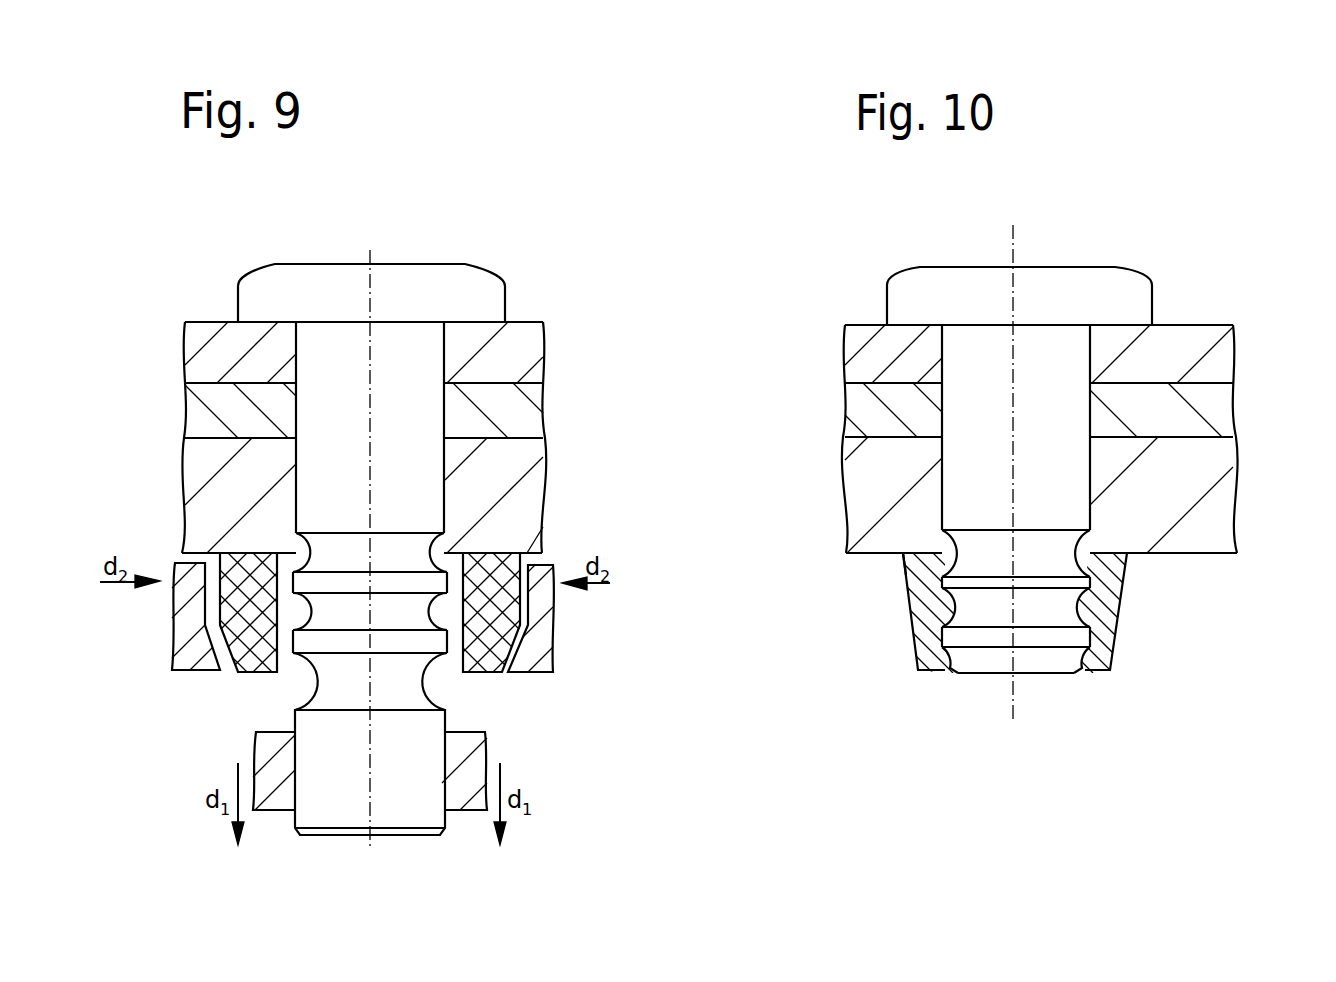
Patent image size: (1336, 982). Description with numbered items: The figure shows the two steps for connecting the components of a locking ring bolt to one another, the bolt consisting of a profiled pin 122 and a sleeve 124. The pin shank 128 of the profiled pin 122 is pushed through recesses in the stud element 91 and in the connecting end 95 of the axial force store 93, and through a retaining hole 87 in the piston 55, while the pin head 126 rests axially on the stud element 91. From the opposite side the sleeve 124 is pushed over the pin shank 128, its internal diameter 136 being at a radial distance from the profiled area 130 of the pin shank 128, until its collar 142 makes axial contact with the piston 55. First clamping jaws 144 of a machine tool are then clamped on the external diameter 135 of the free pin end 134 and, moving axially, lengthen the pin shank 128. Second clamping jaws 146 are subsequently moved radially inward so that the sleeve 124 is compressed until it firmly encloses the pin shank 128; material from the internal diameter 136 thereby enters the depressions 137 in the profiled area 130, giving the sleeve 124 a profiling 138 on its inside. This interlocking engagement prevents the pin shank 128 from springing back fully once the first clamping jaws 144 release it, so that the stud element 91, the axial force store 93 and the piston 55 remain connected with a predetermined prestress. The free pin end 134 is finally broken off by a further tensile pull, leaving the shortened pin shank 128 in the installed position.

In FIG. 9, the profiled pin 122 is at (428, 263).
In FIG. 10, the profiled pin 122 is at (1030, 267).
In FIG. 9, the pin head 126 is at (453, 290).
In FIG. 10, the pin head 126 is at (1083, 295).
In FIG. 9, the pin shank 128 is at (333, 348).
In FIG. 10, the pin shank 128 is at (1030, 663).
In FIG. 9, the retaining hole 87 is at (293, 457).
In FIG. 10, the retaining hole 87 is at (1093, 463).
In FIG. 9, the stud element 91 is at (230, 342).
In FIG. 10, the stud element 91 is at (1212, 370).
In FIG. 9, the axial force store 93 is at (218, 403).
In FIG. 10, the axial force store 93 is at (1213, 420).
In FIG. 9, the connecting end 95 is at (510, 405).
In FIG. 10, the connecting end 95 is at (868, 403).
In FIG. 9, the piston 55 is at (208, 493).
In FIG. 10, the piston 55 is at (1200, 522).
In FIG. 9, the collar 142 is at (243, 556).
In FIG. 10, the collar 142 is at (1130, 565).
In FIG. 9, the profiled area 130 is at (447, 548).
In FIG. 10, the profiled area 130 is at (1002, 613).
In FIG. 9, the depressions 137 is at (498, 555).
In FIG. 10, the depressions 137 is at (1070, 613).
In FIG. 9, the external diameter 135 is at (442, 768).
In FIG. 9, the free pin end 134 is at (325, 802).
In FIG. 9, the first clamping jaws 144 is at (468, 793).
In FIG. 9, the sleeve 124 is at (343, 653).
In FIG. 10, the sleeve 124 is at (917, 663).
In FIG. 9, the internal diameter 136 is at (248, 665).
In FIG. 9, the second clamping jaws 146 is at (195, 599).
In FIG. 10, the profiling 138 is at (945, 608).